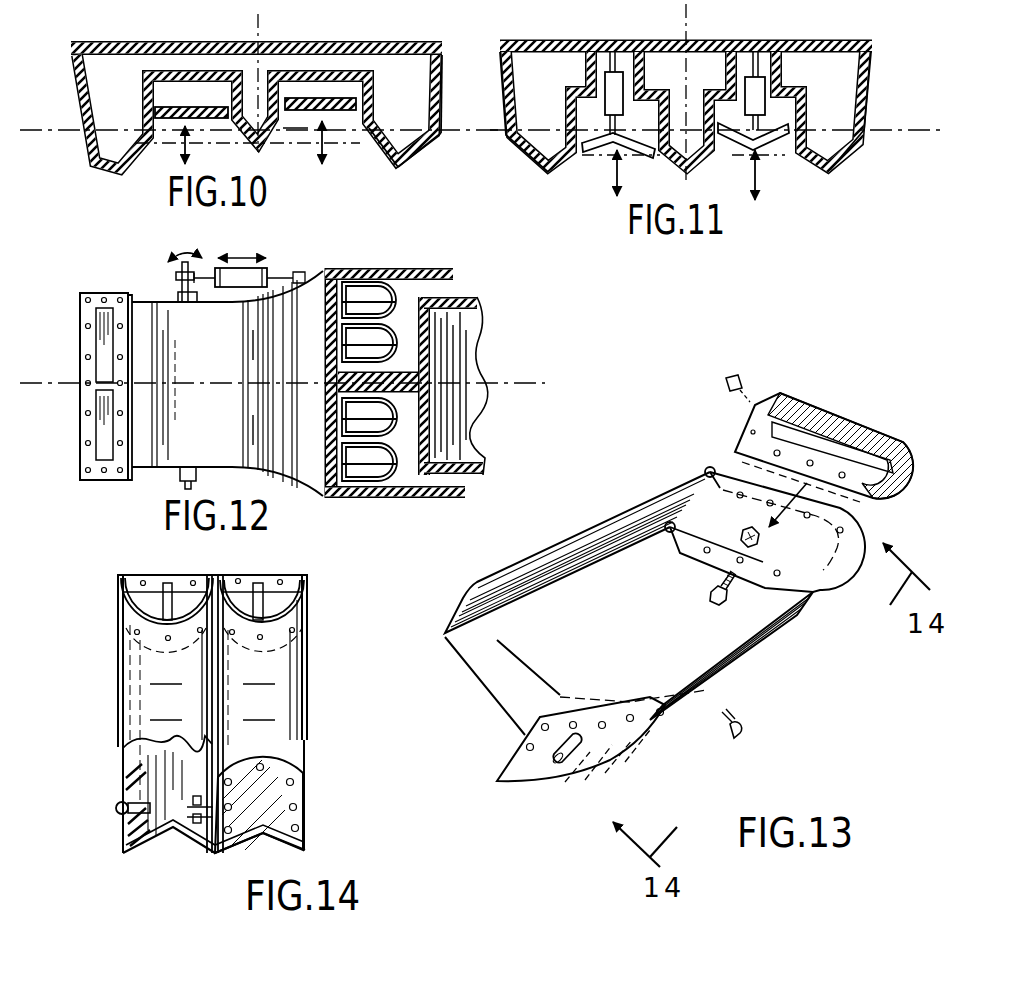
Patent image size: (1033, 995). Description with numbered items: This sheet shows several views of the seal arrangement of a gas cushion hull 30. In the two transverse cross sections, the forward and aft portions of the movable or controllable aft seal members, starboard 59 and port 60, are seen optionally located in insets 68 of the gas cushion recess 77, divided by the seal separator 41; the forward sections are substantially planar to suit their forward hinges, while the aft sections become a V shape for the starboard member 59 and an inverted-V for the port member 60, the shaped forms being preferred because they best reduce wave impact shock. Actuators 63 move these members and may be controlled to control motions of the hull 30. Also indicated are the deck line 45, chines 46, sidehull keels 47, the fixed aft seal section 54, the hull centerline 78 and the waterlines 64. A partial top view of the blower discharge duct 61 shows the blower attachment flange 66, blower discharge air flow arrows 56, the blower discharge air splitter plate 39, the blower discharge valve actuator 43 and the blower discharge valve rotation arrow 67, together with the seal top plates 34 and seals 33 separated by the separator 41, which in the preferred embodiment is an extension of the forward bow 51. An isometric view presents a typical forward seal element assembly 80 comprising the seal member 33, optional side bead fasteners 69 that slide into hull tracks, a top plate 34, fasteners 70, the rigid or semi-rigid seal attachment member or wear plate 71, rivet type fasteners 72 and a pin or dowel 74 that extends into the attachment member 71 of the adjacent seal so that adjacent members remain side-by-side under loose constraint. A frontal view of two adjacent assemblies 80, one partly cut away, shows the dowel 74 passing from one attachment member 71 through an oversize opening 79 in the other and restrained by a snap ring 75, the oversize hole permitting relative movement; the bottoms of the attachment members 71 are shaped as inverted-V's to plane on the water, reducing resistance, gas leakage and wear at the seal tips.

In FIG. 10, the hull 30 is at (105, 75).
In FIG. 11, the hull 30 is at (663, 43).
In FIG. 12, the seal member 33 is at (401, 285).
In FIG. 13, the seal member 33 is at (650, 629).
In FIG. 14, the seal member 33 is at (212, 673).
In FIG. 12, the seal top plate 34 is at (370, 297).
In FIG. 13, the seal top plate 34 is at (856, 424).
In FIG. 14, the seal top plate 34 is at (132, 598).
In FIG. 12, the blower discharge air splitter plate 39 is at (100, 450).
In FIG. 10, the seal separator 41 is at (260, 152).
In FIG. 12, the seal separator 41 is at (425, 378).
In FIG. 12, the blower discharge valve actuator 43 is at (272, 270).
In FIG. 10, the deck line 45 is at (440, 44).
In FIG. 11, the deck line 45 is at (873, 44).
In FIG. 10, the chine 46 is at (440, 142).
In FIG. 11, the chine 46 is at (862, 145).
In FIG. 10, the sidehull keel 47 is at (401, 171).
In FIG. 11, the sidehull keel 47 is at (548, 172).
In FIG. 12, the forward bow 51 is at (458, 338).
In FIG. 11, the fixed aft seal section 54 is at (621, 173).
In FIG. 12, the blower discharge air flow arrows 56 is at (90, 321).
In FIG. 10, the starboard movable aft seal member 59 is at (347, 102).
In FIG. 11, the starboard movable aft seal member 59 is at (735, 142).
In FIG. 10, the port movable aft seal member 60 is at (174, 106).
In FIG. 11, the port movable aft seal member 60 is at (597, 153).
In FIG. 12, the blower discharge duct 61 is at (235, 336).
In FIG. 11, the actuator 63 is at (608, 78).
In FIG. 10, the waterline 64 is at (468, 125).
In FIG. 11, the waterline 64 is at (916, 128).
In FIG. 12, the blower attachment flange 66 is at (105, 307).
In FIG. 12, the blower discharge valve rotation arrow 67 is at (190, 262).
In FIG. 10, the inset 68 is at (200, 72).
In FIG. 11, the inset 68 is at (583, 92).
In FIG. 13, the side bead fastener 69 is at (565, 542).
In FIG. 14, the side bead fastener 69 is at (118, 680).
In FIG. 13, the fastener 70 is at (738, 376).
In FIG. 13, the seal attachment member 71 is at (672, 740).
In FIG. 14, the seal attachment member 71 is at (152, 842).
In FIG. 13, the rivet type fastener 72 is at (745, 724).
In FIG. 14, the rivet type fastener 72 is at (118, 804).
In FIG. 13, the pin or dowel 74 is at (562, 766).
In FIG. 14, the pin or dowel 74 is at (186, 792).
In FIG. 14, the snap ring 75 is at (208, 833).
In FIG. 10, the gas cushion recess 77 is at (296, 117).
In FIG. 10, the hull centerline 78 is at (259, 32).
In FIG. 11, the hull centerline 78 is at (689, 36).
In FIG. 12, the hull centerline 78 is at (503, 384).
In FIG. 14, the opening 79 is at (240, 836).
In FIG. 12, the seal element assembly 80 is at (348, 339).
In FIG. 13, the seal element assembly 80 is at (800, 620).
In FIG. 14, the seal element assembly 80 is at (212, 709).